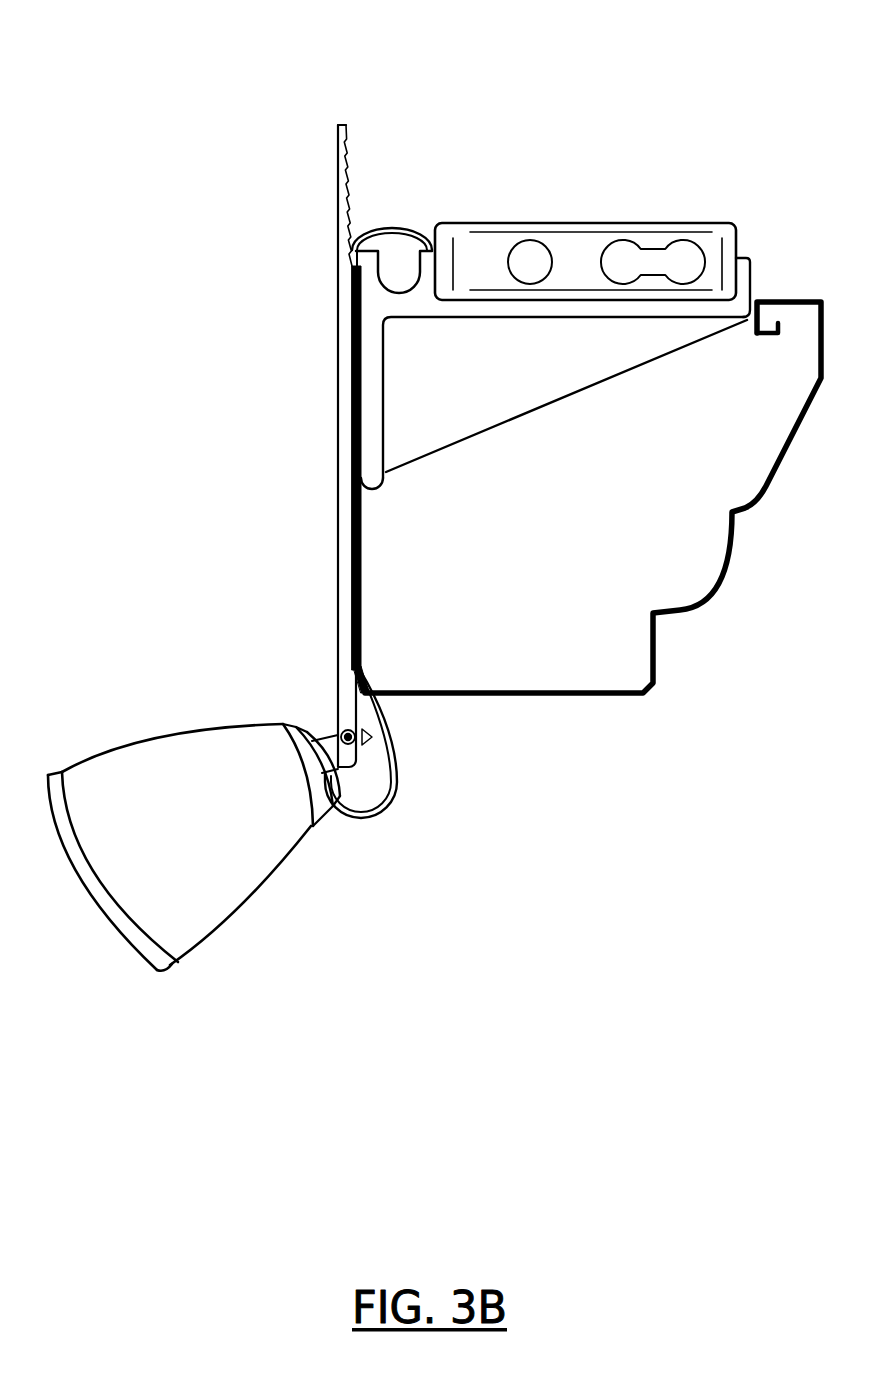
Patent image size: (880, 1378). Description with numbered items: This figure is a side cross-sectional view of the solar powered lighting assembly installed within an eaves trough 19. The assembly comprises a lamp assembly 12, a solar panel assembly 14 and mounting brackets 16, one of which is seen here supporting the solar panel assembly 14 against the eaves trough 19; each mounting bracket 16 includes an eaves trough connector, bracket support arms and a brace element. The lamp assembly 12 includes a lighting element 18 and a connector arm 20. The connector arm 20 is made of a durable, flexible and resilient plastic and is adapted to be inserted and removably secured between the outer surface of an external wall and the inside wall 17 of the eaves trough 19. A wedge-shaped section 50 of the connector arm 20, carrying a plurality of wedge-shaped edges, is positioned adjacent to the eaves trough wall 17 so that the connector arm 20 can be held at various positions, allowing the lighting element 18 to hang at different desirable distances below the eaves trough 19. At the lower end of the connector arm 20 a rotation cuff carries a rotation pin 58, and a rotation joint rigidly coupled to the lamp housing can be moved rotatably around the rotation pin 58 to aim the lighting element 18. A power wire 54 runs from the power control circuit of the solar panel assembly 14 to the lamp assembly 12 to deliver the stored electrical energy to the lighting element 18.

The lamp assembly 12 is at (268, 550).
The solar panel assembly 14 is at (591, 351).
The mounting brackets 16 is at (542, 428).
The inside wall 17 is at (357, 560).
The lighting element 18 is at (210, 890).
The eaves trough 19 is at (680, 612).
The connector arm 20 is at (337, 434).
The wedge-shaped section 50 is at (354, 202).
The power wire 54 is at (390, 228).
The rotation pin 58 is at (347, 727).